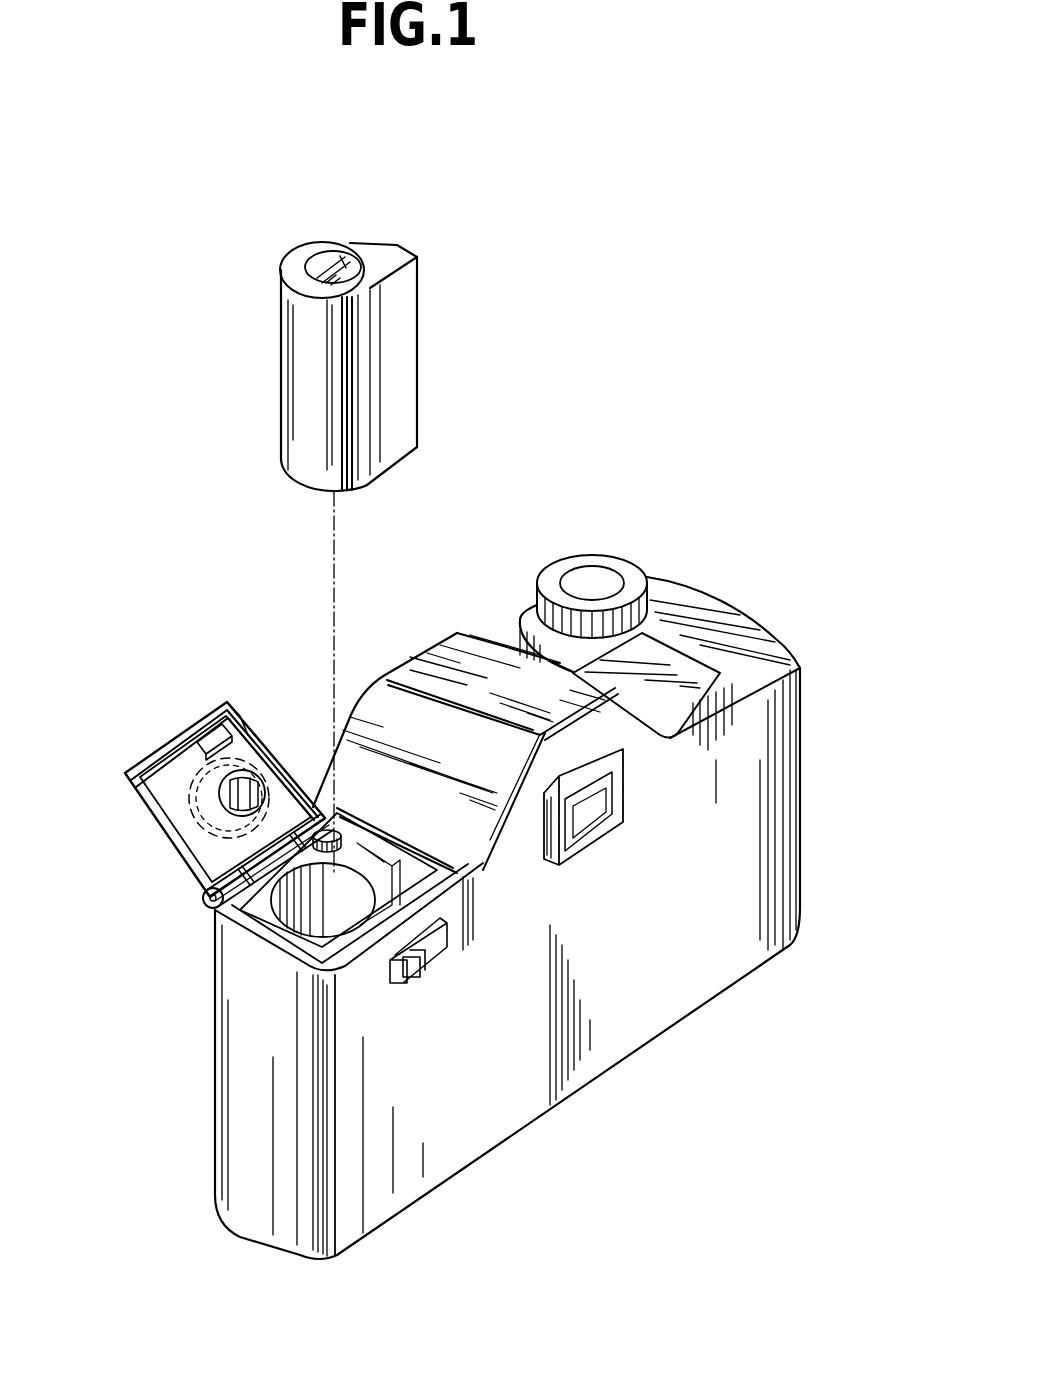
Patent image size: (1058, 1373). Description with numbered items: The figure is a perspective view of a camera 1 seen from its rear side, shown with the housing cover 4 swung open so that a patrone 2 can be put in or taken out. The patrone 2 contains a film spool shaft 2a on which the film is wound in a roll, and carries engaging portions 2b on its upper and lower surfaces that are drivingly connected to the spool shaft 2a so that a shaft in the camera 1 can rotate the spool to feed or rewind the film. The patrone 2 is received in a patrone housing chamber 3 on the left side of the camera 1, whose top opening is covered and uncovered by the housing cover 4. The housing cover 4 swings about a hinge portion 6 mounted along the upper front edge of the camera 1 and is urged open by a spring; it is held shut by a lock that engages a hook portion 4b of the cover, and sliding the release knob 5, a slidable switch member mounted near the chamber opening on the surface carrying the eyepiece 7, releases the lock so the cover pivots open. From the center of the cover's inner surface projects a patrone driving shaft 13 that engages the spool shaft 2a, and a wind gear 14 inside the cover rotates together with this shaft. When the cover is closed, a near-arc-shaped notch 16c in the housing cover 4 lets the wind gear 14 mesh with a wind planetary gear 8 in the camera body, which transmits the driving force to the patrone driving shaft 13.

The camera 1 is at (902, 835).
The patrone 2 is at (349, 338).
The film spool shaft 2a is at (343, 263).
The engaging portions 2b is at (330, 270).
The patrone housing chamber 3 is at (307, 907).
The housing cover 4 is at (188, 759).
The hook portion 4b is at (197, 735).
The release knob 5 is at (390, 977).
The hinge portion 6 is at (203, 897).
The eyepiece 7 is at (594, 795).
The wind planetary gear 8 is at (317, 800).
The patrone driving shaft 13 is at (215, 805).
The wind gear 14 is at (220, 793).
The notch 16c is at (248, 745).